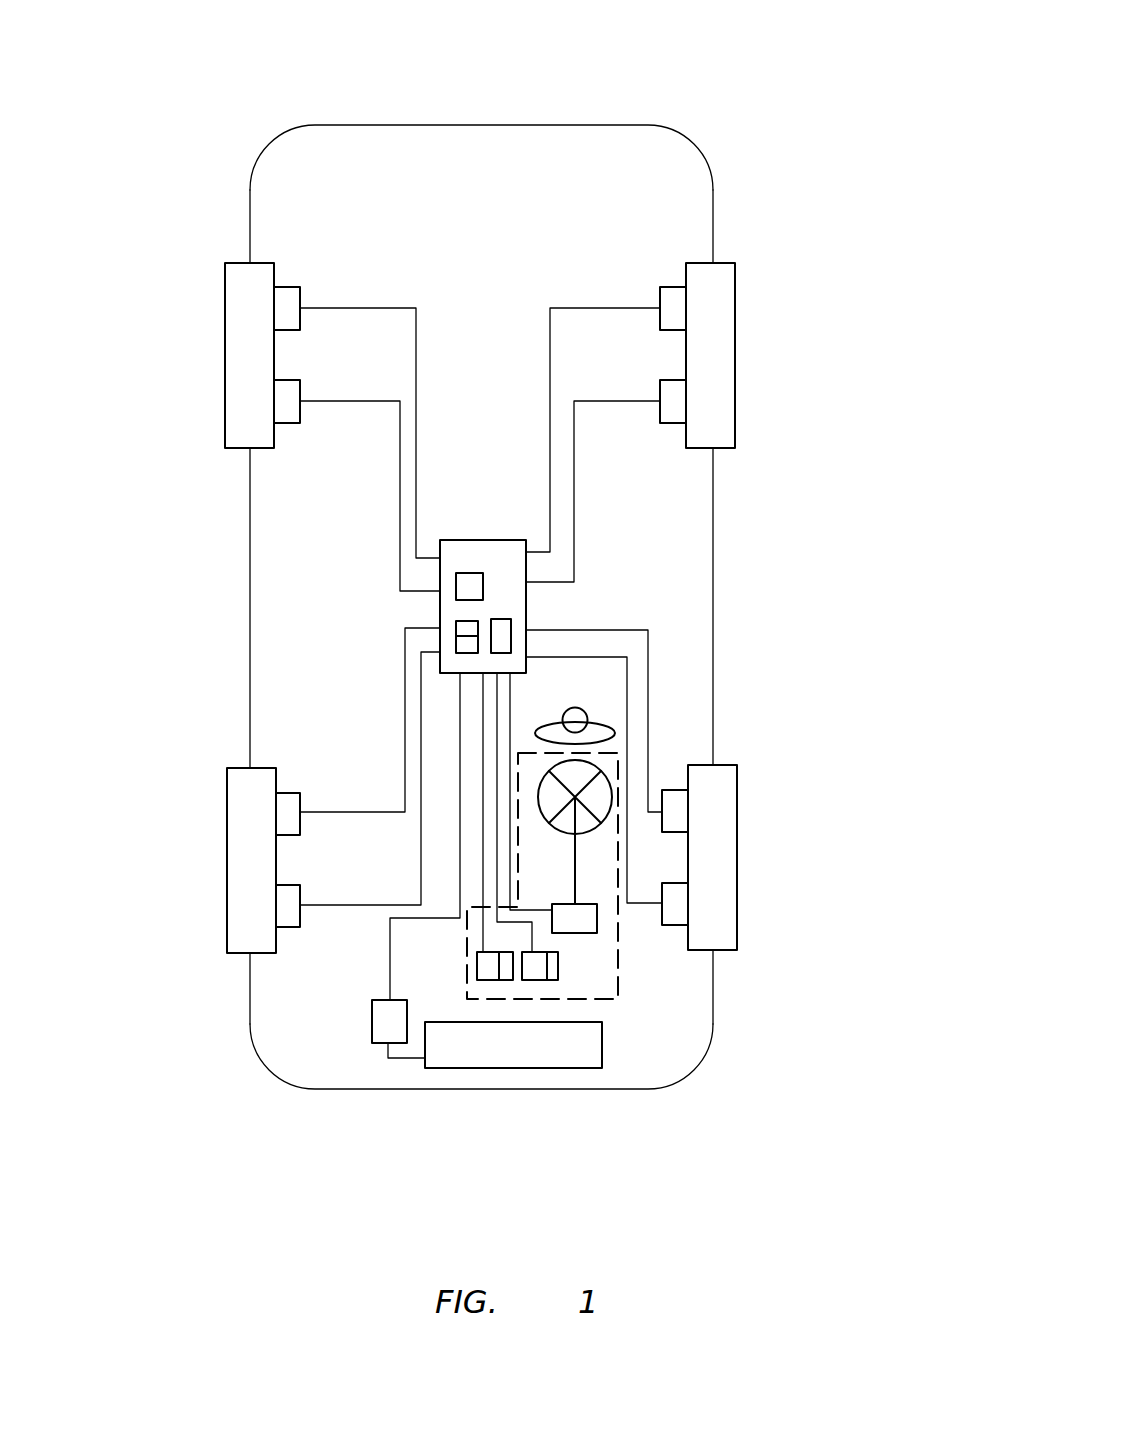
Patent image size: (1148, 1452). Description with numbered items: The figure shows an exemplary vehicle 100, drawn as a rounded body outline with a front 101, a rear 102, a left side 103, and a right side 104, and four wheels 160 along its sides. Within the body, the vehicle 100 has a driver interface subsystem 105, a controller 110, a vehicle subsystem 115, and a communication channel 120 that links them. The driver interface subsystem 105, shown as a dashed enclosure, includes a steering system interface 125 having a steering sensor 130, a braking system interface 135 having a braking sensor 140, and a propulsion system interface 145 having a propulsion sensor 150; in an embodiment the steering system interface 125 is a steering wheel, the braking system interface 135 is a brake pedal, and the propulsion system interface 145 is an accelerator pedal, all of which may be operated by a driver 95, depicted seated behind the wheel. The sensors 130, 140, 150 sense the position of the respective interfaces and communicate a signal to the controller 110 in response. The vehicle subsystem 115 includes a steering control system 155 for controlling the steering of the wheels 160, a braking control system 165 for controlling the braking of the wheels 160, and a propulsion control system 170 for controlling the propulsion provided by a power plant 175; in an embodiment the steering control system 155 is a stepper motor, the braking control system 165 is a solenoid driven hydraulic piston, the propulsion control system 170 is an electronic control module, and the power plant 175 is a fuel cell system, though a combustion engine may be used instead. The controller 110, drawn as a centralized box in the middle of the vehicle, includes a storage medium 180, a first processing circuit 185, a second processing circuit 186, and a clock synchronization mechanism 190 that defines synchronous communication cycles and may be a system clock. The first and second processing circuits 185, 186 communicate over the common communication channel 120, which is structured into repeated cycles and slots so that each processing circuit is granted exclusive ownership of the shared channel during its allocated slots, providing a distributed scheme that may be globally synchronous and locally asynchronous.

The vehicle 100 is at (907, 37).
The front 101 is at (323, 1099).
The rear 102 is at (560, 124).
The left side 103 is at (715, 565).
The right side 104 is at (248, 565).
The driver 95 is at (598, 722).
The driver interface subsystem 105 is at (607, 753).
The controller 110 is at (497, 540).
The vehicle subsystem 115 is at (304, 838).
The communication channel 120 is at (403, 698).
The steering system interface 125 is at (590, 833).
The steering sensor 130 is at (597, 913).
The braking system interface 135 is at (558, 967).
The braking sensor 140 is at (533, 980).
The propulsion system interface 145 is at (505, 980).
The propulsion sensor 150 is at (491, 980).
The steering control system 155 is at (286, 423).
The wheels 160 is at (225, 420).
The braking control system 165 is at (289, 287).
The propulsion control system 170 is at (377, 1045).
The power plant 175 is at (602, 1053).
The storage medium 180 is at (472, 573).
The first processing circuit 185 is at (460, 621).
The second processing circuit 186 is at (467, 654).
The clock synchronization mechanism 190 is at (503, 618).